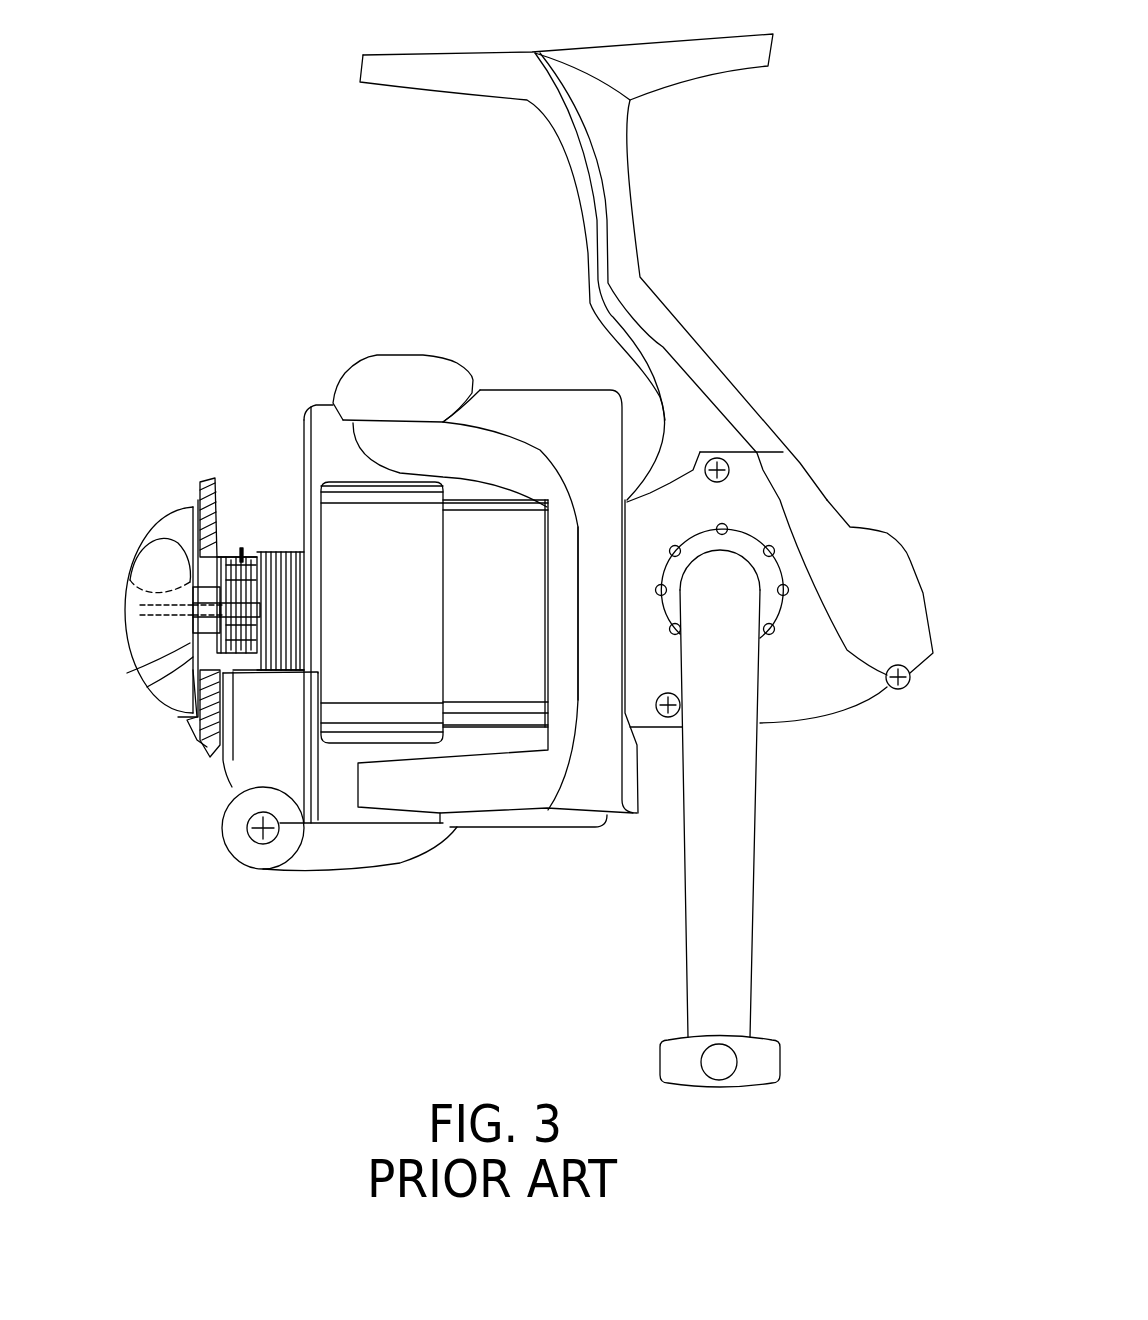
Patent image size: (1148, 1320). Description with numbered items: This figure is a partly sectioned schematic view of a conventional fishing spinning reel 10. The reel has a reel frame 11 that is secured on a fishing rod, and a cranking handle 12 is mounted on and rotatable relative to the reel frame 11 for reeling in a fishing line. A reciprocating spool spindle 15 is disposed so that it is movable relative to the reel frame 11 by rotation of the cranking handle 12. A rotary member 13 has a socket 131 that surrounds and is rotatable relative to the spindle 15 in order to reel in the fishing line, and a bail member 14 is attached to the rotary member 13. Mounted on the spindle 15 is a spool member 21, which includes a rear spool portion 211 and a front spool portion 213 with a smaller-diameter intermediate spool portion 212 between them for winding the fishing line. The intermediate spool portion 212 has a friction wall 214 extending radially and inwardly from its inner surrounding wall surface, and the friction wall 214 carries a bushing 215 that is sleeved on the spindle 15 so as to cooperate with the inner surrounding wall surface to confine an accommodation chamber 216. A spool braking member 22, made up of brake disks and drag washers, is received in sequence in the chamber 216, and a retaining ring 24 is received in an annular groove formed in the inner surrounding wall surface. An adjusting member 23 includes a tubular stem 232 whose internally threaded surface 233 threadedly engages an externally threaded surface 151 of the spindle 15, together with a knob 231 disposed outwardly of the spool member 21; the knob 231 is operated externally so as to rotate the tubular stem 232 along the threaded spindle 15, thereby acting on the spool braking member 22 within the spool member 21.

The fishing spinning reel 10 is at (677, 313).
The reel frame 11 is at (800, 455).
The cranking handle 12 is at (753, 905).
The rotary member 13 is at (548, 388).
The socket 131 is at (527, 505).
The bail member 14 is at (290, 870).
The spool spindle 15 is at (270, 670).
The externally threaded surface 151 is at (147, 557).
The spool member 21 is at (372, 477).
The rear spool portion 211 is at (416, 490).
The intermediate spool portion 212 is at (280, 670).
The front spool portion 213 is at (200, 747).
The friction wall 214 is at (263, 550).
The bushing 215 is at (283, 552).
The accommodation chamber 216 is at (230, 672).
The spool braking member 22 is at (242, 550).
The adjusting member 23 is at (160, 513).
The knob 231 is at (138, 533).
The tubular stem 232 is at (197, 630).
The internally threaded surface 233 is at (193, 593).
The retaining ring 24 is at (190, 688).